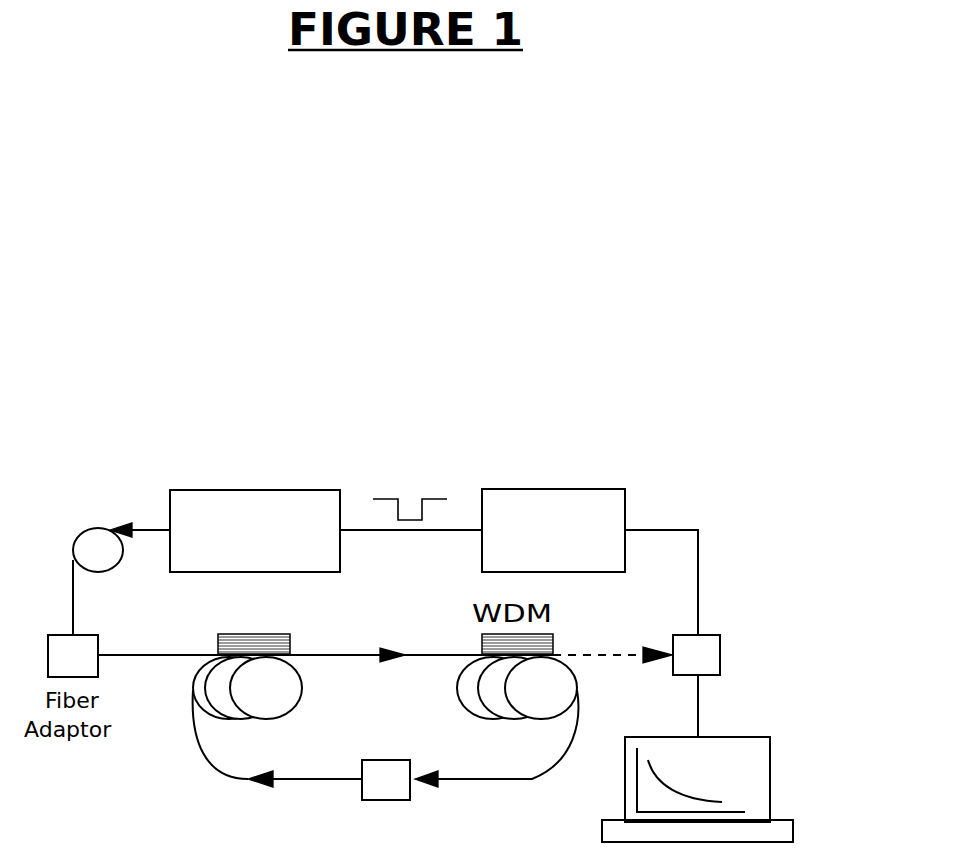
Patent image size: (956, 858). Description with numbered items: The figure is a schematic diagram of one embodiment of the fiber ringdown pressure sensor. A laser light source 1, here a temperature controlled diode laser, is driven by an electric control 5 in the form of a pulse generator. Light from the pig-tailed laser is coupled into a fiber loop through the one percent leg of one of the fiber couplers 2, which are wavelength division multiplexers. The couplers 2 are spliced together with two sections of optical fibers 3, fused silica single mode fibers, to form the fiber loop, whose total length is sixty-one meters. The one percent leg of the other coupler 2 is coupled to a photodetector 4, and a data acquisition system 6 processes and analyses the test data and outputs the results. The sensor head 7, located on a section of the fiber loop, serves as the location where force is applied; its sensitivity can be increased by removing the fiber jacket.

The laser light source 1 is at (255, 510).
The fiber couplers 2 is at (272, 627).
The sections of optical fibers 3 is at (259, 718).
The photodetector 4 is at (763, 639).
The electric control 5 is at (553, 511).
The data acquisition system 6 is at (701, 758).
The sensor head 7 is at (358, 791).